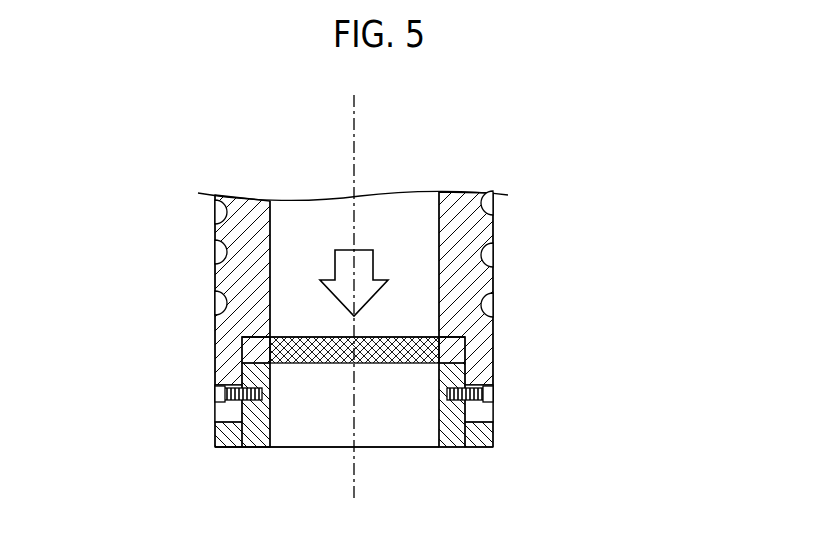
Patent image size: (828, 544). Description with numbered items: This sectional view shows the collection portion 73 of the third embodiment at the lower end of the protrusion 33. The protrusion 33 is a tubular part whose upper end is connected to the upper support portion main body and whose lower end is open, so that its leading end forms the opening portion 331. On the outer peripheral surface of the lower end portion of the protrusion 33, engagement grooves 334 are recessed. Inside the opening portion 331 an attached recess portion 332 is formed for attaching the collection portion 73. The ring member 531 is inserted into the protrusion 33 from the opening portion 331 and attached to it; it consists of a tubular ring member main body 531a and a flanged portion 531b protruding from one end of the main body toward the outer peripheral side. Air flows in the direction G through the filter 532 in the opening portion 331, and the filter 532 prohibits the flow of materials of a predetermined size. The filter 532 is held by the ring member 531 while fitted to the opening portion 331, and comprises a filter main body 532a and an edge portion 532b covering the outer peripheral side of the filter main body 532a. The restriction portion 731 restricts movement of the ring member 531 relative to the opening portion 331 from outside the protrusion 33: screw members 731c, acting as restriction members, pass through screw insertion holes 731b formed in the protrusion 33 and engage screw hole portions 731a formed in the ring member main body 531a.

The protrusion 33 is at (452, 205).
The engagement grooves 334 is at (493, 256).
The attached recess portion 332 is at (460, 362).
The opening portion 331 is at (302, 448).
The filter 532 is at (457, 312).
The filter main body 532a is at (408, 338).
The edge portion 532b is at (465, 350).
The ring member 531 is at (442, 421).
The ring member main body 531a is at (457, 412).
The flanged portion 531b is at (485, 437).
The restriction portion 731 is at (320, 396).
The screw hole portions 731a is at (218, 404).
The screw insertion holes 731b is at (216, 390).
The screw members 731c is at (232, 396).
The collection portion 73 is at (246, 448).
The gas flow direction G is at (389, 215).